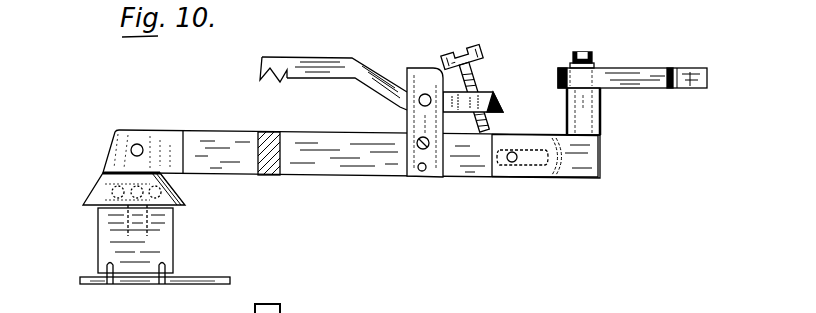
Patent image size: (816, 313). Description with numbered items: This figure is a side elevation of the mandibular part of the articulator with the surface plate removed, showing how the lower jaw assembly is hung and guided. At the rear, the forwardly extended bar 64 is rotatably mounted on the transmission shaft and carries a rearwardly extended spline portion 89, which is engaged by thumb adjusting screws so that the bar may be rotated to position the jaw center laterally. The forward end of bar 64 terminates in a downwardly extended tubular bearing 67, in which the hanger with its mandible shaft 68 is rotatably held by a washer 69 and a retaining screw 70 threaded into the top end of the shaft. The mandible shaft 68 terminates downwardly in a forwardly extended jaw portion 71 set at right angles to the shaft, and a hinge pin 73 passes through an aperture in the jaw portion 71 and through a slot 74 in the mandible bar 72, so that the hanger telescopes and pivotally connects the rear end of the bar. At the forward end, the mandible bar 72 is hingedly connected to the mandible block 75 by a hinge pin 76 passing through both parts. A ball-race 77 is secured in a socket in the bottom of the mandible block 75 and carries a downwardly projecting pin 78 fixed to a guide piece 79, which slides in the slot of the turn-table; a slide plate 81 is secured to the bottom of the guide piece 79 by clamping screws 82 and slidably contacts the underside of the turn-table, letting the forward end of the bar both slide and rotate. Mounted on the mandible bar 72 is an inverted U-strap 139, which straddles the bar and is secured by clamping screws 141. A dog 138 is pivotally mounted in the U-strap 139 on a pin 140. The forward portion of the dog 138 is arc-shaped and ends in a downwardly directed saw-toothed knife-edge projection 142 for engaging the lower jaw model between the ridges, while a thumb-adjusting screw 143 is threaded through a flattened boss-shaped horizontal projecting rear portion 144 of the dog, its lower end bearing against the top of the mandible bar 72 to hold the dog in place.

The forwardly extended bar 64 is at (635, 73).
The tubular bearing 67 is at (602, 117).
The mandible shaft 68 is at (595, 163).
The washer 69 is at (594, 65).
The retaining screw 70 is at (573, 55).
The jaw portion 71 is at (530, 172).
The mandible bar 72 is at (258, 160).
The hinge pin 73 is at (515, 152).
The slot 74 is at (527, 158).
The mandible block 75 is at (90, 200).
The hinge pin 76 is at (141, 144).
The ball-race 77 is at (97, 185).
The downwardly projecting pin 78 is at (105, 222).
The guide piece 79 is at (110, 247).
The slide plate 81 is at (80, 278).
The clamping screws 82 is at (162, 285).
The spline portion 89 is at (697, 80).
The dog 138 is at (345, 67).
The inverted U-strap 139 is at (423, 73).
The pin 140 is at (419, 103).
The clamping screws 141 is at (426, 169).
The saw-toothed knife-edge projection 142 is at (267, 85).
The thumb-adjusting screw 143 is at (505, 45).
The boss-shaped horizontal projecting rear portion 144 is at (495, 102).